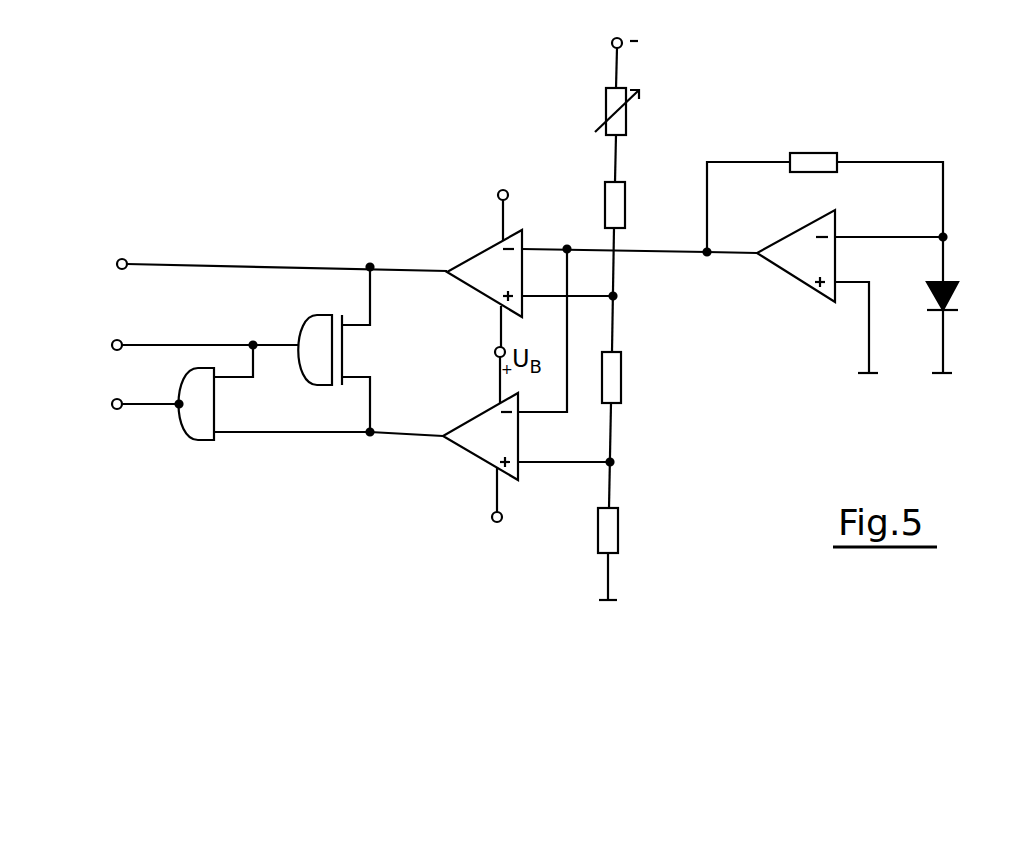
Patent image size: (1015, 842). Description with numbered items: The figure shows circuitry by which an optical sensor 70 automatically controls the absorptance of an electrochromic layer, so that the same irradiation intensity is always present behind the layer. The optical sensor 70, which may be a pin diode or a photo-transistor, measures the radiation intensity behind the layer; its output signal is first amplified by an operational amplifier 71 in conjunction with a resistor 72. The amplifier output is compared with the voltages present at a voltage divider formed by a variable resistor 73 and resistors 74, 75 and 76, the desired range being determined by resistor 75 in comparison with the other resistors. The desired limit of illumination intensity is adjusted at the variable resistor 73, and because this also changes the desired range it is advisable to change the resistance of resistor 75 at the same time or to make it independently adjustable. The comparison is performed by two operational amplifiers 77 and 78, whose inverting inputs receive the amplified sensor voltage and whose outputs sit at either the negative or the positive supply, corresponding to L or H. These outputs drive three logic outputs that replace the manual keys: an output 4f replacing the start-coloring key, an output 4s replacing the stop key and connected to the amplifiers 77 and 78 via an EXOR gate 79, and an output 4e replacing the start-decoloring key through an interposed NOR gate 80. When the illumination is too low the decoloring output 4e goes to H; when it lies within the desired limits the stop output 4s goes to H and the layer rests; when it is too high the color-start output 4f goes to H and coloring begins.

The optical sensor 70 is at (948, 284).
The operational amplifier 71 is at (792, 234).
The resistor 72 is at (813, 153).
The variable resistor 73 is at (606, 101).
The resistor 74 is at (606, 210).
The resistor 75 is at (618, 374).
The resistor 76 is at (608, 533).
The operational amplifier 77 is at (490, 258).
The operational amplifier 78 is at (462, 422).
The EXOR gate 79 is at (312, 350).
The NOR gate 80 is at (202, 403).
The output 4f is at (261, 266).
The output 4s is at (187, 355).
The output 4e is at (129, 406).